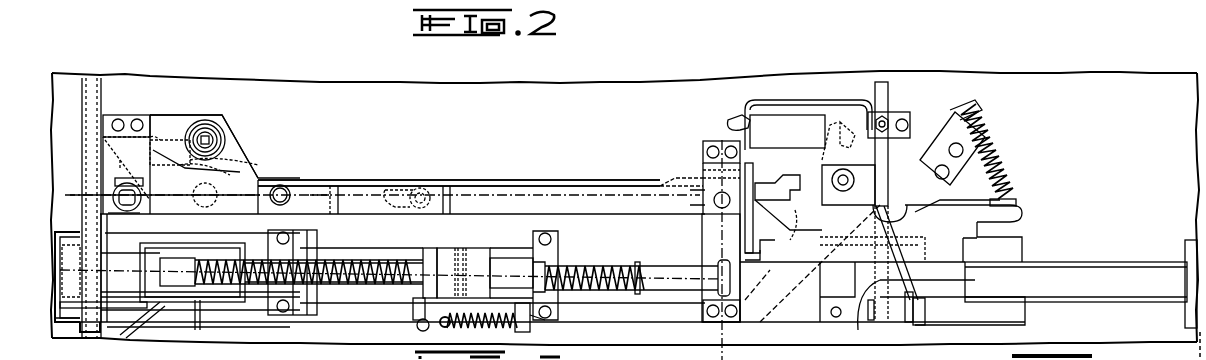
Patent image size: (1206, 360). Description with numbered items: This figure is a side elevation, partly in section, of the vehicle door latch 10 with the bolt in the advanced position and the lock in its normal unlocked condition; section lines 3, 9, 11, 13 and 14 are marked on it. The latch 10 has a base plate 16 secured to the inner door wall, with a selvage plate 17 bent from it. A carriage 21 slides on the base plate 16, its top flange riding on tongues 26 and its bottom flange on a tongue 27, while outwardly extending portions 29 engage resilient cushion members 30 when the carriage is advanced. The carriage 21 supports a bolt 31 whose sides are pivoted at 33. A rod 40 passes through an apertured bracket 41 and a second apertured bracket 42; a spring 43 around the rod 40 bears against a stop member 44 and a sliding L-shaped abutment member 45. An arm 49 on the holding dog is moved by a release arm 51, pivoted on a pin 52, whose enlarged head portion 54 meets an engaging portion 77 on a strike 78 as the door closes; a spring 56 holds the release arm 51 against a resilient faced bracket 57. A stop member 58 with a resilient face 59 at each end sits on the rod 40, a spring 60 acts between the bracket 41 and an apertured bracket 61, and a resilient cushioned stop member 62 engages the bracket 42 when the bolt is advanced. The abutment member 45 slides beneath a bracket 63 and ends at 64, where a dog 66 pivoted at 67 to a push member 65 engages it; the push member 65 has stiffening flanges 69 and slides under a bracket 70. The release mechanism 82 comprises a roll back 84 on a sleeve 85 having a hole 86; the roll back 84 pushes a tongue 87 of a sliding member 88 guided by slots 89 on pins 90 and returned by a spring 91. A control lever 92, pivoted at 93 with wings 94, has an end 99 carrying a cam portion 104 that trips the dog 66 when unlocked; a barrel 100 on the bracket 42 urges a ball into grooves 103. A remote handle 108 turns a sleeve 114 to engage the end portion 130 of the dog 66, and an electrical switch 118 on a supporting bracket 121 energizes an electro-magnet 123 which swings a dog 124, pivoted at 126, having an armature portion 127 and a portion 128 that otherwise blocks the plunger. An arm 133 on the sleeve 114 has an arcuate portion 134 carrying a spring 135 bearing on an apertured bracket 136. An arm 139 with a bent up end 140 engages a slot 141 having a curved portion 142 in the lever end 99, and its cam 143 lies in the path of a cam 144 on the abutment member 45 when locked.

The section line 3- 3 is at (43, 263).
The section line 9- 9 is at (818, 240).
The latch 10 is at (247, 134).
The section line 11- 11 is at (78, 201).
The section line 13- 13 is at (720, 221).
The section line 14- 14 is at (811, 195).
The base plate 16 is at (187, 116).
The selvage plate 17 is at (104, 118).
The carriage 21 is at (135, 312).
The tongues 26 is at (258, 232).
The tongue 27 is at (97, 334).
The outwardly extending portions 29 is at (307, 244).
The resilient cushion members 30 is at (305, 228).
The bolt 31 is at (125, 242).
The pivot 33 is at (220, 306).
The rod 40 is at (385, 280).
The apertured bracket 41 is at (553, 244).
The second apertured bracket 42 is at (703, 240).
The spring 43 is at (357, 268).
The stop member 44 is at (189, 275).
The L-shaped abutment member 45 is at (425, 249).
The arm 49 is at (160, 312).
The release arm 51 is at (265, 330).
The pin 52 is at (412, 308).
The enlarged head portion 54 is at (58, 305).
The spring 56 is at (468, 318).
The resilient faced bracket 57 is at (530, 327).
The stop member 58 is at (465, 258).
The resilient face 59 is at (450, 253).
The spring 60 is at (590, 268).
The apertured bracket 61 is at (640, 292).
The resilient cushioned stop member 62 is at (715, 288).
The bracket 63 is at (813, 325).
The end 64 is at (865, 322).
The push member 65 is at (965, 268).
The dog 66 is at (900, 274).
The pivot 67 is at (925, 312).
The stiffening flanges 69 is at (1066, 264).
The bracket 70 is at (1185, 318).
The engaging portion 77 is at (55, 325).
The strike 78 is at (62, 242).
The release mechanism 82 is at (505, 190).
The roll back 84 is at (152, 140).
The sleeve 85 is at (115, 195).
The hole 86 is at (125, 210).
The tongue 87 is at (160, 158).
The sliding member 88 is at (250, 170).
The slots 89 is at (383, 186).
The pins 90 is at (418, 188).
The spring 91 is at (210, 120).
The control lever 92 is at (318, 193).
The pivot 93 is at (282, 192).
The wings 94 is at (122, 180).
The end 99 is at (628, 196).
The barrel 100 is at (714, 196).
The grooves 103 is at (690, 205).
The cam portion 104 is at (895, 250).
The handle 108 is at (765, 331).
The sleeve 114 is at (908, 215).
The electrical switch 118 is at (898, 110).
The supporting bracket 121 is at (908, 120).
The electro-magnet 123 is at (748, 115).
The dog 124 is at (858, 130).
The pivot 126 is at (840, 190).
The armature portion 127 is at (838, 100).
The portion 128 is at (950, 200).
The end portion 130 is at (898, 226).
The arm 133 is at (1018, 214).
The arcuate portion 134 is at (998, 178).
The spring 135 is at (987, 137).
The apertured bracket 136 is at (968, 104).
The arm 139 is at (825, 158).
The bent up end 140 is at (782, 192).
The slot 141 is at (770, 205).
The curved portion 142 is at (760, 192).
The cam 143 is at (797, 228).
The cam 144 is at (768, 236).